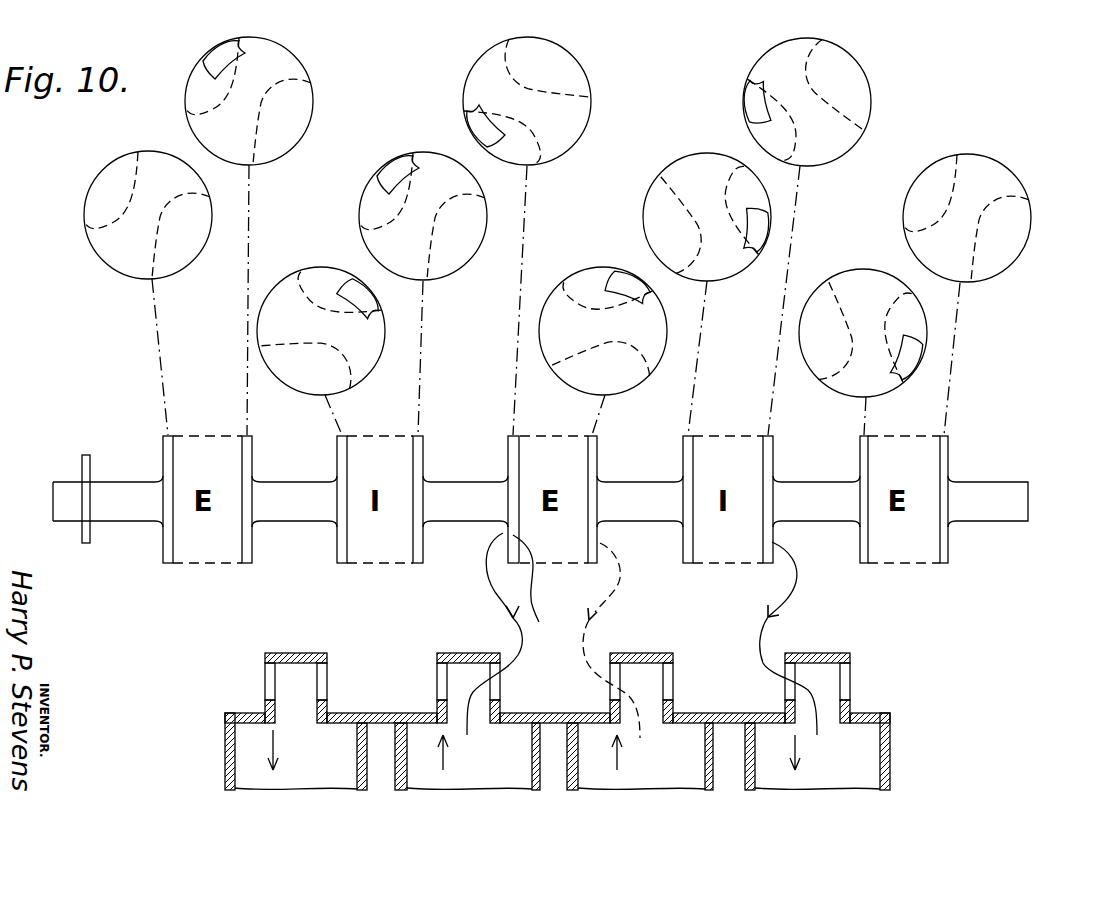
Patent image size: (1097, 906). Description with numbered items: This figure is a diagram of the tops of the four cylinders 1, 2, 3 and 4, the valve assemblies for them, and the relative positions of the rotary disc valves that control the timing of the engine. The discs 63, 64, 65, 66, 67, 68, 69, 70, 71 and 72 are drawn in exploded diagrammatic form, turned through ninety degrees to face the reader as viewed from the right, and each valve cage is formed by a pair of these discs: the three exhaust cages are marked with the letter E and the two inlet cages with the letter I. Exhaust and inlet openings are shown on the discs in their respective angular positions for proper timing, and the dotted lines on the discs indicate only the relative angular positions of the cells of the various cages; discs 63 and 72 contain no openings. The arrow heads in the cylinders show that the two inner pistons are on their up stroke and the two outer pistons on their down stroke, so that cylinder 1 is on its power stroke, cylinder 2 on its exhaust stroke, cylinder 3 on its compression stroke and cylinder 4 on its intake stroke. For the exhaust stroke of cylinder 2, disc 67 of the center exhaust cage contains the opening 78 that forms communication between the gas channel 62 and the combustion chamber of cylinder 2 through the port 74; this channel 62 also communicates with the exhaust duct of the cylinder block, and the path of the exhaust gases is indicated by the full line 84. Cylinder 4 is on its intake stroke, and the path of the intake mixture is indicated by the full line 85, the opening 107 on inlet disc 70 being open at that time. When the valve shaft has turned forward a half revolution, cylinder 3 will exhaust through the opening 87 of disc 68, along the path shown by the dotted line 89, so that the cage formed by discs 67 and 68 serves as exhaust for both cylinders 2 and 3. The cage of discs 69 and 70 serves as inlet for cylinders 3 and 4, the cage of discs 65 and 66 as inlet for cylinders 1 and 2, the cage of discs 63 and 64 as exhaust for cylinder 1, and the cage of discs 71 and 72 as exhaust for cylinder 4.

The cylinder No. 1 is at (322, 787).
The cylinder No. 2 is at (492, 787).
The cylinder No. 3 is at (668, 787).
The cylinder No. 4 is at (855, 787).
The gas channel 62 is at (568, 552).
The disc 63 is at (95, 180).
The disc 64 is at (310, 68).
The disc 65 is at (293, 273).
The disc 66 is at (362, 197).
The disc 67 is at (585, 80).
The disc 68 is at (559, 282).
The disc 69 is at (645, 197).
The inlet disc 70 is at (865, 74).
The disc 71 is at (843, 272).
The disc 72 is at (1020, 178).
The port 74 is at (500, 698).
The opening 78 is at (537, 582).
The full line (exhaust gas path) 84 is at (497, 596).
The full line (intake mixture path) 85 is at (790, 598).
The opening 87 is at (607, 272).
The dotted line (exhaust path) 89 is at (606, 598).
The opening 107 is at (812, 160).